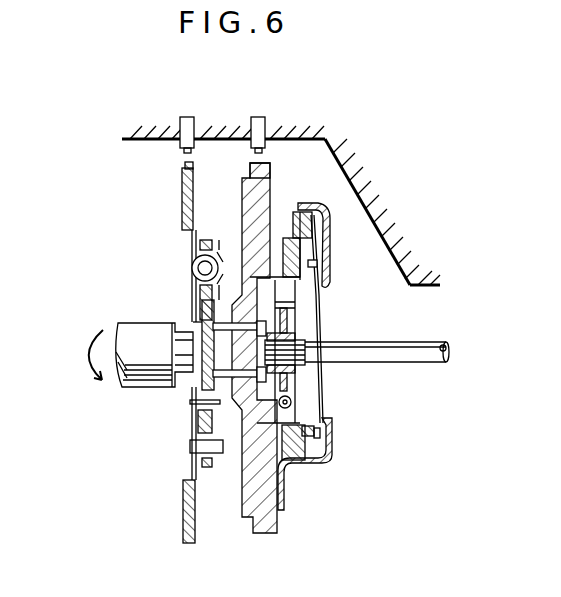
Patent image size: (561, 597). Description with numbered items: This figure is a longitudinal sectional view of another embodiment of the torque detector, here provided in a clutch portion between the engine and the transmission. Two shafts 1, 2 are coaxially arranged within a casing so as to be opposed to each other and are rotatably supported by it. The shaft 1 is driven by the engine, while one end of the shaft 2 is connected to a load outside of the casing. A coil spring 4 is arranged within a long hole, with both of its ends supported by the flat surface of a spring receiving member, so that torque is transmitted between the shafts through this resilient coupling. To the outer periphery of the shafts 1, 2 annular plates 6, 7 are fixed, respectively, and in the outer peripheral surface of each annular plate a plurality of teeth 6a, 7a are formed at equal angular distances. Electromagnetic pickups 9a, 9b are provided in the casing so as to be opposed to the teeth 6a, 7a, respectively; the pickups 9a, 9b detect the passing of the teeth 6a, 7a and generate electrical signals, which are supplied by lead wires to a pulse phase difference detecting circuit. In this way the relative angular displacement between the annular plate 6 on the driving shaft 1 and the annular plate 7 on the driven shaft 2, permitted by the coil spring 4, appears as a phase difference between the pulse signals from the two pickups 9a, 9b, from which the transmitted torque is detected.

The shaft 1 is at (150, 367).
The shaft 2 is at (412, 364).
The coil spring 4 is at (191, 268).
The annular plate 6 is at (182, 200).
The teeth 6a is at (183, 165).
The annular plate 7 is at (265, 190).
The teeth 7a is at (258, 162).
The electromagnetic pickup 9a is at (190, 117).
The electromagnetic pickup 9b is at (260, 117).